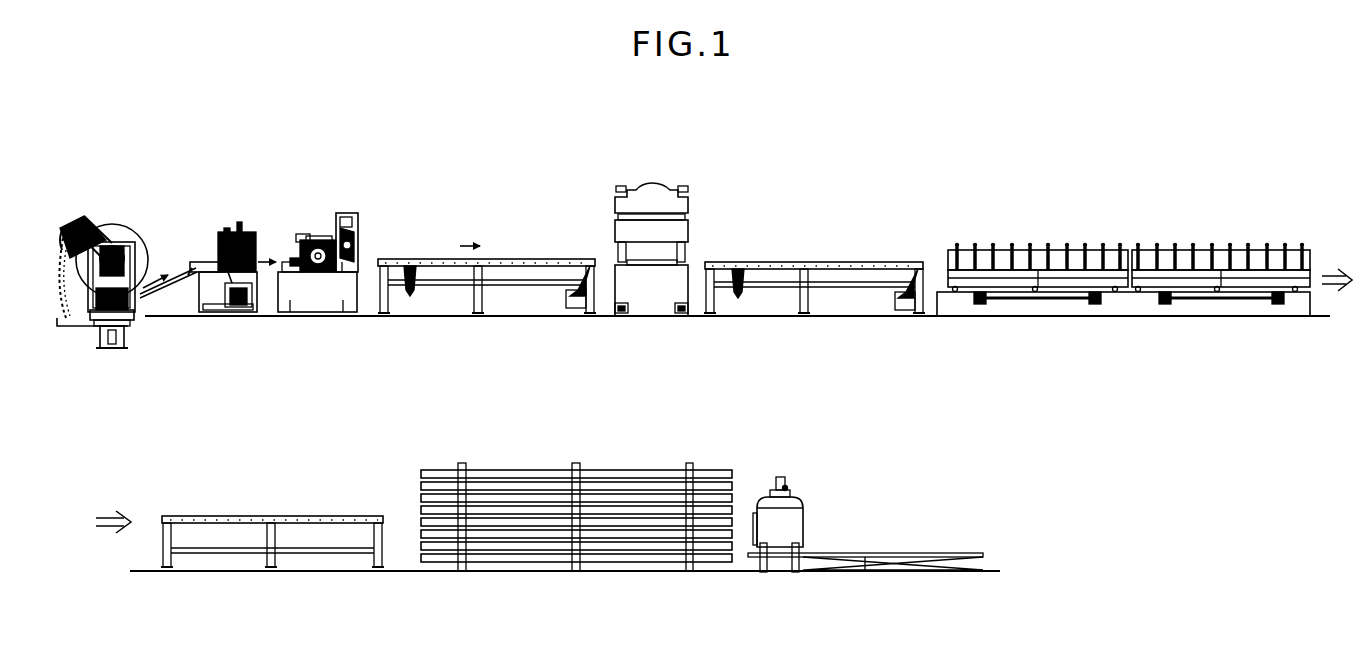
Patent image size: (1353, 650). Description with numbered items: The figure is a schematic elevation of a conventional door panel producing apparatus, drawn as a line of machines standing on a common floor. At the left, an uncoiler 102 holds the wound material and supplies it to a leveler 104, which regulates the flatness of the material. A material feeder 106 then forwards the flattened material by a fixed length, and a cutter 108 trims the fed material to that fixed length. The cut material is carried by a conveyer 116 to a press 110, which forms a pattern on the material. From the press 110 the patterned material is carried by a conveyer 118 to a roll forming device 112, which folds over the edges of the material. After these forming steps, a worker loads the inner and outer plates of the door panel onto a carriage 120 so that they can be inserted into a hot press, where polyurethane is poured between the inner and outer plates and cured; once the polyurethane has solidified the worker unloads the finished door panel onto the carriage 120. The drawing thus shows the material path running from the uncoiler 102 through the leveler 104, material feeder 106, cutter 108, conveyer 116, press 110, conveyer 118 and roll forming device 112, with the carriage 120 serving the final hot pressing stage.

The uncoiler 102 is at (129, 217).
The leveler 104 is at (224, 234).
The material feeder 106 is at (308, 276).
The cutter 108 is at (354, 219).
The press 110 is at (666, 182).
The roll forming device 112 is at (1041, 245).
The conveyer 116 is at (752, 465).
The conveyer 118 is at (887, 259).
The carriage 120 is at (266, 504).